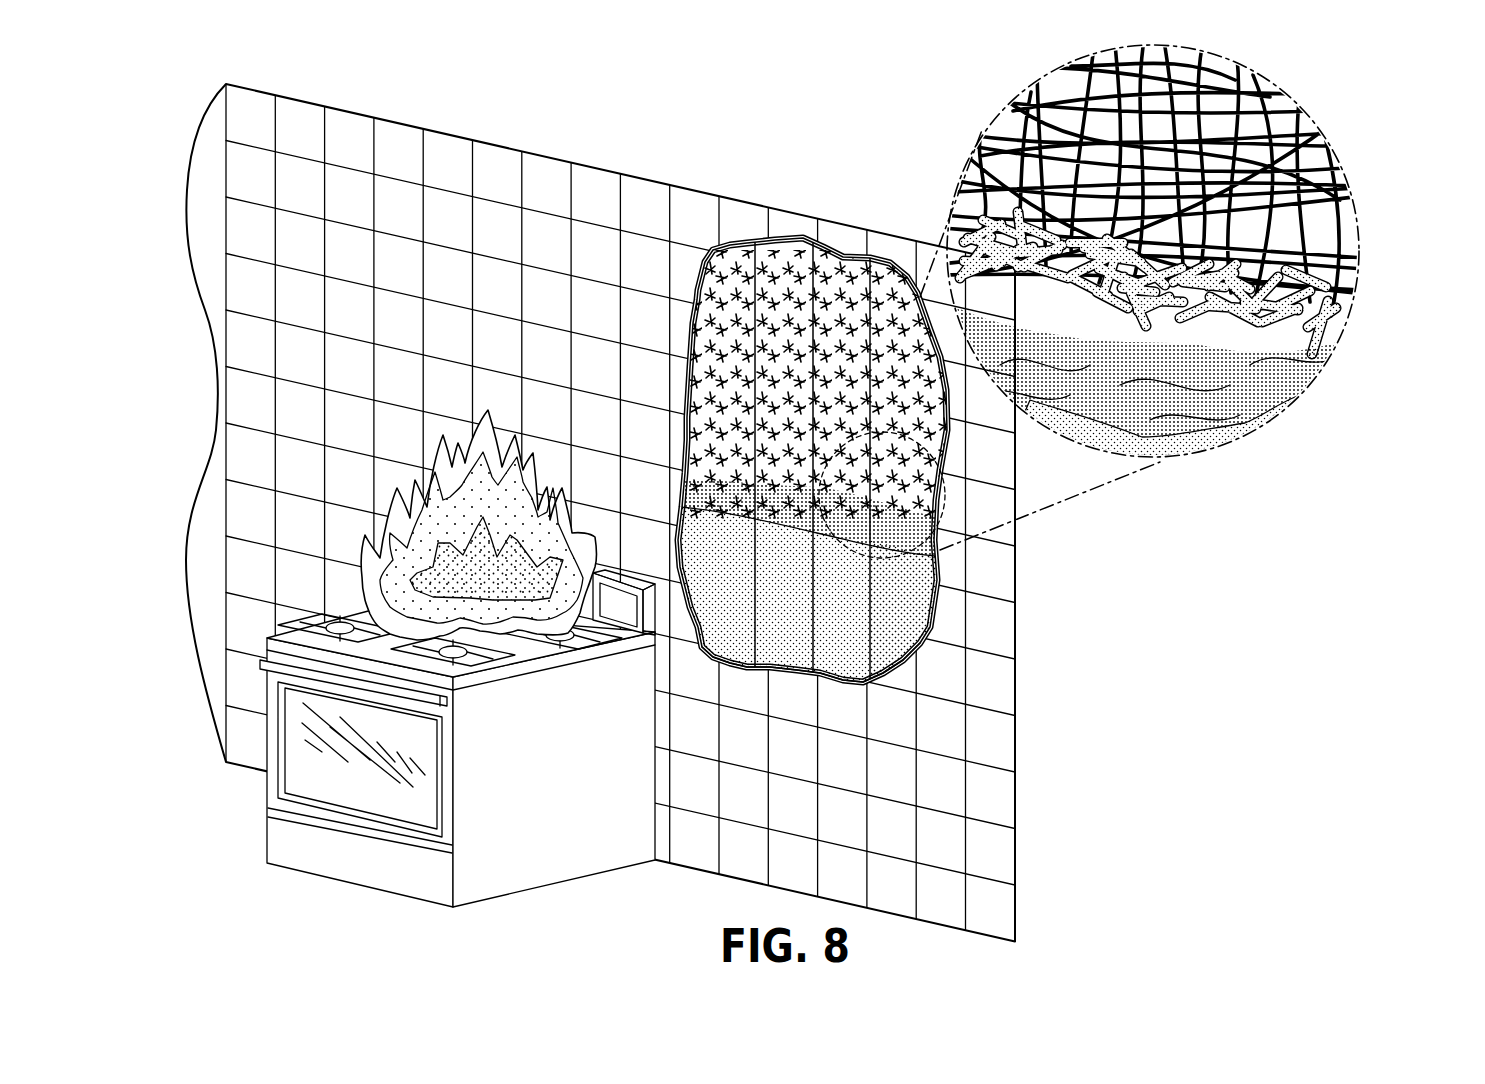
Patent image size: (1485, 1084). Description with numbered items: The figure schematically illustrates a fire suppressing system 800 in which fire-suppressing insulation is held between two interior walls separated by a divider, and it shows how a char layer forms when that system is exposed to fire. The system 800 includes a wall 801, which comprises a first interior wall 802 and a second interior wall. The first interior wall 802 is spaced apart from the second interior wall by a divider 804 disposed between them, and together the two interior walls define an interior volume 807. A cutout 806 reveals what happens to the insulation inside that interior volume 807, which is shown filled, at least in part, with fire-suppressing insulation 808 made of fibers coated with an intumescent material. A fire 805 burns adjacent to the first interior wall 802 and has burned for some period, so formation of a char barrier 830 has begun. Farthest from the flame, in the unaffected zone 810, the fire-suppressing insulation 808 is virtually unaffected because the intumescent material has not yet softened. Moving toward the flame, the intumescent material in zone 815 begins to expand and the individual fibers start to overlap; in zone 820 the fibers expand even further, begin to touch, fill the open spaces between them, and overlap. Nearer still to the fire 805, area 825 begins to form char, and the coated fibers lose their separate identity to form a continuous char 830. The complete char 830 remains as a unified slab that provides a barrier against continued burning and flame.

The system 800 is at (557, 495).
The wall 801 is at (200, 388).
The first interior wall 802 is at (198, 503).
The divider 804 is at (740, 247).
The fire 805 is at (362, 588).
The cutout 806 is at (730, 672).
The interior volume 807 is at (780, 640).
The fire-suppressing insulation 808 is at (838, 253).
The unaffected zone 810 is at (712, 326).
The zone 815 is at (703, 390).
The zone 820 is at (697, 449).
The area 825 is at (718, 500).
The char barrier 830 is at (900, 640).